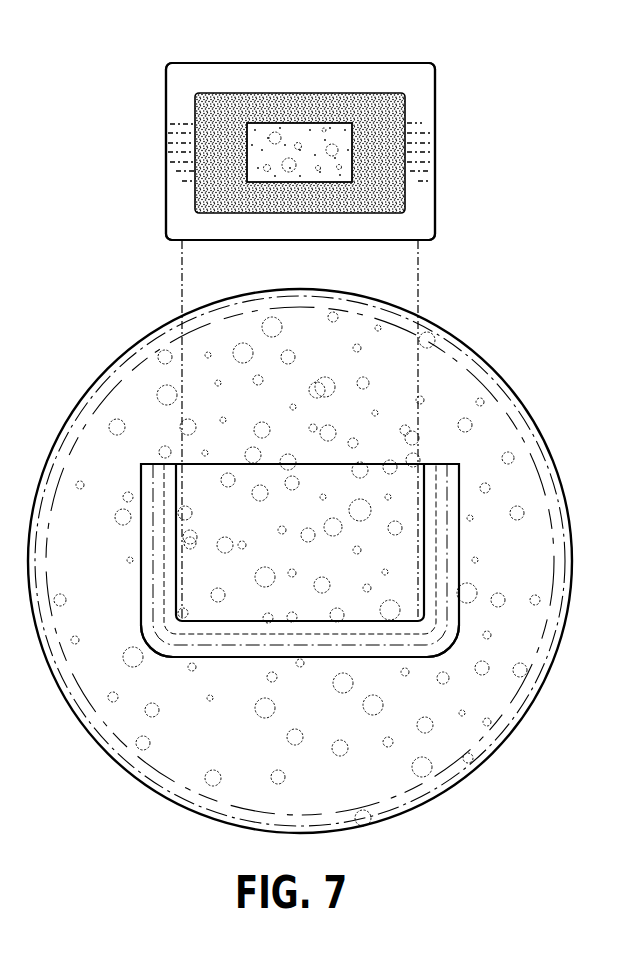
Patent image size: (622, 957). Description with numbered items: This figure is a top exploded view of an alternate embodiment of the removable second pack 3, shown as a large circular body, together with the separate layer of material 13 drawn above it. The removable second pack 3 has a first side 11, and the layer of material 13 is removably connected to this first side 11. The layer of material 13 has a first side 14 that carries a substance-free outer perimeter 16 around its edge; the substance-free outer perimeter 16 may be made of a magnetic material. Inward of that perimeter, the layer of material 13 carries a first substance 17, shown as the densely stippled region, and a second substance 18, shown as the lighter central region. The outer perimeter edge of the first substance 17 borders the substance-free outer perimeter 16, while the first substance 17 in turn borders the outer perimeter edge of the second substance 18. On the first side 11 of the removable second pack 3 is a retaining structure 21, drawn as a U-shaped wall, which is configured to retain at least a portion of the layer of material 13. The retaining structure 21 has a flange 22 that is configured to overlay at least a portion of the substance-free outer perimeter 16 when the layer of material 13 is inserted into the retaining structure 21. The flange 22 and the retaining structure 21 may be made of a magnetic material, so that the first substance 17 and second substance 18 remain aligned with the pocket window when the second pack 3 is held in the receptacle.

The removable second pack 3 is at (522, 713).
The first side 11 is at (450, 383).
The layer of material 13 is at (434, 144).
The first side 14 is at (184, 79).
The substance-free outer perimeter 16 is at (413, 77).
The first substance 17 is at (366, 106).
The second substance 18 is at (295, 138).
The retaining structure 21 is at (422, 660).
The flange 22 is at (427, 478).